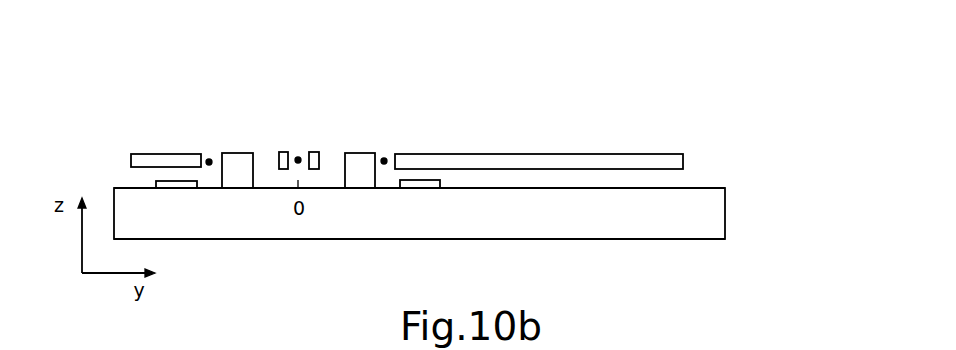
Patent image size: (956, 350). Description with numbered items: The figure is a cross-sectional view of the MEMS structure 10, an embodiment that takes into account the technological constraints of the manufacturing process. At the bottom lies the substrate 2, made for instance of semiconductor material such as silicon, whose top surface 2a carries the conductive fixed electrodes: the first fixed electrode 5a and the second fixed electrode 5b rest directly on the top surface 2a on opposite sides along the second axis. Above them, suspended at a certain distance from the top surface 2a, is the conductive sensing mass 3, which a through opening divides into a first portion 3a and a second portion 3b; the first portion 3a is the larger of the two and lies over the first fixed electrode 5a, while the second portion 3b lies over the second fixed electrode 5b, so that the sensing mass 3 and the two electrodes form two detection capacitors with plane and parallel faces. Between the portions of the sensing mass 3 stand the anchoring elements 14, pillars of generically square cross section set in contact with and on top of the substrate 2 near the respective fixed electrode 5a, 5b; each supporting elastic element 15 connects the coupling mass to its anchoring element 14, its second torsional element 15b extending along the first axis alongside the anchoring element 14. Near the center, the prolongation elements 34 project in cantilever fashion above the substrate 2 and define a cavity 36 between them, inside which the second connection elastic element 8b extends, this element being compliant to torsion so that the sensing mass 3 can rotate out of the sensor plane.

The substrate 2 is at (677, 228).
The top surface 2a is at (706, 184).
The sensing mass 3 is at (547, 126).
The first portion 3a is at (647, 163).
The second portion 3b is at (139, 160).
The first fixed electrode 5a is at (427, 184).
The second fixed electrode 5b is at (157, 186).
The second connection elastic element 8b is at (300, 157).
The MEMS structure 10 is at (440, 144).
The anchoring element 14 is at (368, 160).
The supporting elastic element 15 is at (242, 160).
The second torsional element 15b is at (210, 159).
The prolongation element 34 is at (281, 152).
The cavity 36 is at (296, 144).